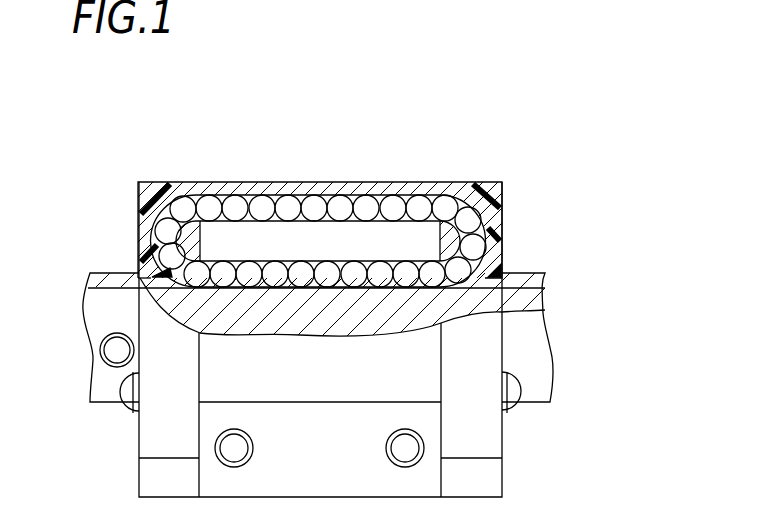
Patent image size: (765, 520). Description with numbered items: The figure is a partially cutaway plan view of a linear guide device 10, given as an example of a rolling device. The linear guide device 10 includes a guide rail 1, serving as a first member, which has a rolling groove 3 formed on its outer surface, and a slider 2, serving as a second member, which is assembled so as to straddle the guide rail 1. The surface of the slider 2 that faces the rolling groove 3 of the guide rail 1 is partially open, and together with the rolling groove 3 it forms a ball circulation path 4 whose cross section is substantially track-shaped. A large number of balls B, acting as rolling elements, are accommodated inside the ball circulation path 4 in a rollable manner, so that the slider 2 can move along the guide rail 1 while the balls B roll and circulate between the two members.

The linear guide device 10 is at (368, 153).
The guide rail 1 is at (535, 360).
The slider 2 is at (138, 433).
The rolling groove 3 is at (516, 283).
The ball circulation path 4 is at (502, 213).
The balls B is at (263, 203).